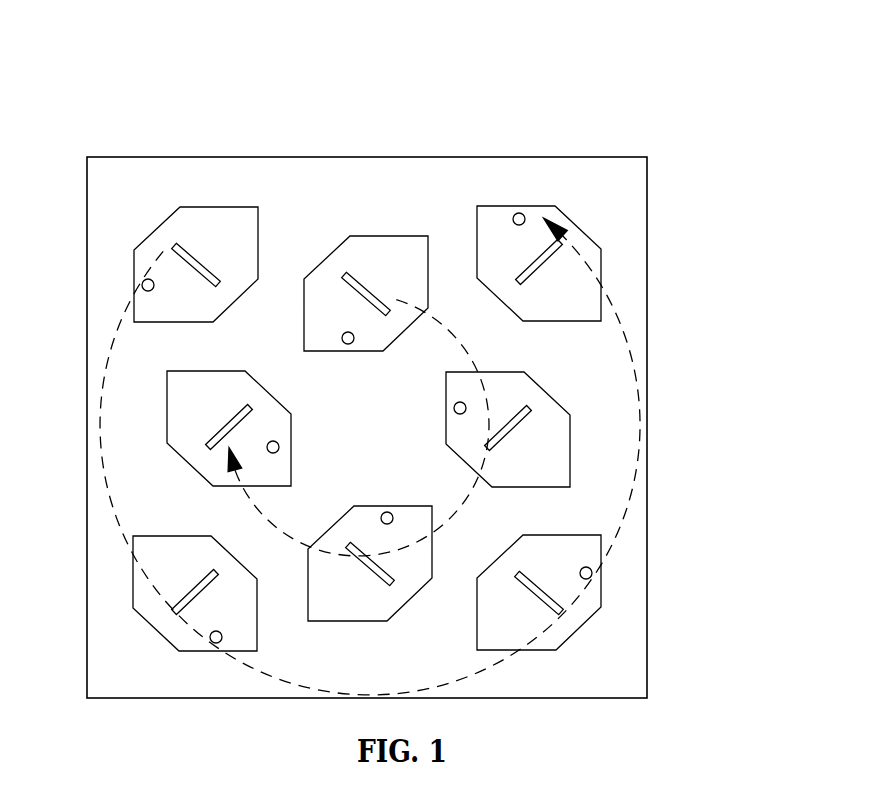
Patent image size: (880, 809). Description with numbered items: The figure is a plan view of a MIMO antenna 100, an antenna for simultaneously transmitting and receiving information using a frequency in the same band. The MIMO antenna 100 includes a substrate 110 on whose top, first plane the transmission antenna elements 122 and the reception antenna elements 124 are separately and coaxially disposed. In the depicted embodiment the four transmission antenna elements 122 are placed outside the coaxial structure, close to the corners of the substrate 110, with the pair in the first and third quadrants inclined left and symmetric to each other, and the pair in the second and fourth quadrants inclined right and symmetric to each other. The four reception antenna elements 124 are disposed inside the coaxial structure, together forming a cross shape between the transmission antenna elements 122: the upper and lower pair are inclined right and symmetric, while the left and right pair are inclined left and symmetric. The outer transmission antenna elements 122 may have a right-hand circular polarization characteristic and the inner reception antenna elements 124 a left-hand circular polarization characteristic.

The MIMO antenna 100 is at (81, 47).
The substrate 110 is at (647, 218).
The transmission antenna elements 122 is at (216, 207).
The reception antenna elements 124 is at (400, 236).